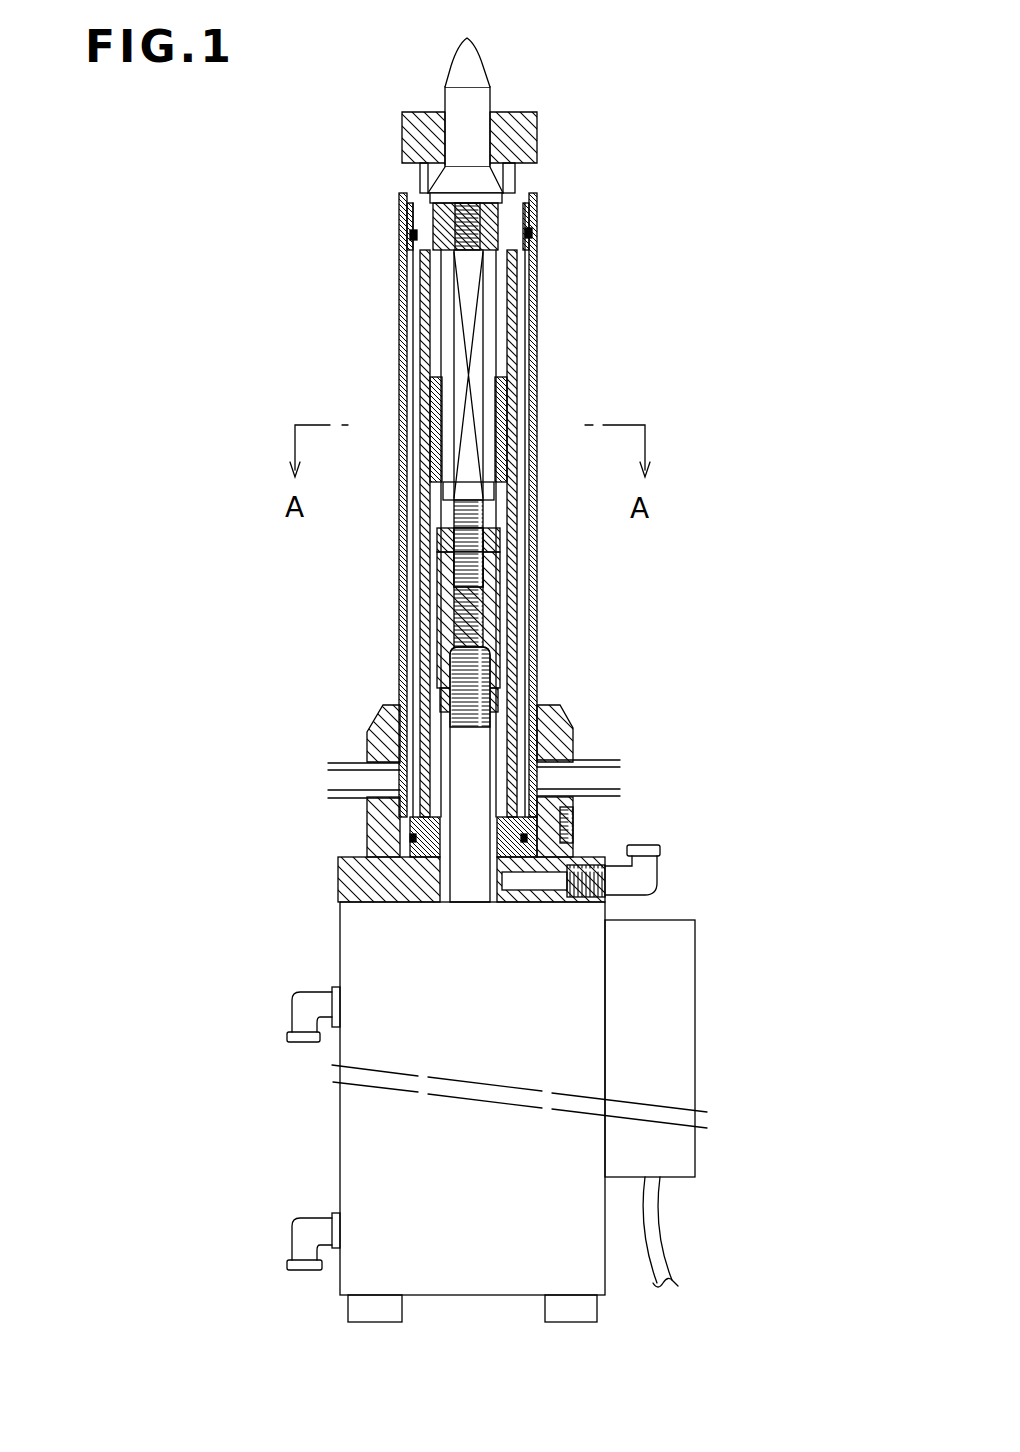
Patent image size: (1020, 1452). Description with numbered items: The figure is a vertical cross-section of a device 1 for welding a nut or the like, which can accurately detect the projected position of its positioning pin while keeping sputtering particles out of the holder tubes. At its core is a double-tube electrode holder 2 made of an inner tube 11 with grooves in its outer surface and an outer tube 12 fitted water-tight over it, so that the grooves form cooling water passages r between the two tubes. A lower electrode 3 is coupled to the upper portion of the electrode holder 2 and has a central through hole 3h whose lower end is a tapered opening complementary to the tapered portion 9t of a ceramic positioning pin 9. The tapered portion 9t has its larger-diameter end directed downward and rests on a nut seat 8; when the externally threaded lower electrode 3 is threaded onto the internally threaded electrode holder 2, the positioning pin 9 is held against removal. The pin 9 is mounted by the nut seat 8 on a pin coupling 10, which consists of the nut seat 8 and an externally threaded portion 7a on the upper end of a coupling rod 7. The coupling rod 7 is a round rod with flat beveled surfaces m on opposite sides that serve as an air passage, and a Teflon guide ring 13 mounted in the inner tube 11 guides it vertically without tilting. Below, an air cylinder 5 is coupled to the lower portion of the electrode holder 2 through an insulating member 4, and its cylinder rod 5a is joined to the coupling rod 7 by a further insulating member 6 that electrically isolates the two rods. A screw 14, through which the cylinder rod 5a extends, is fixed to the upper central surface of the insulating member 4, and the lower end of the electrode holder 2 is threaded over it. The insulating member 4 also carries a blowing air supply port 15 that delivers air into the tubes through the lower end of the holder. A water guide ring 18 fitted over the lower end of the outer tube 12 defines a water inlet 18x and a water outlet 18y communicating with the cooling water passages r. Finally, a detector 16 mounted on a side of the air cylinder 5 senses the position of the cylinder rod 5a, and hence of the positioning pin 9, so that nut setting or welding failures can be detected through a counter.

The device for welding a nut 1 is at (650, 180).
The double-tube electrode holder 2 is at (396, 261).
The lower electrode 3 is at (410, 138).
The through hole 3h is at (482, 130).
The insulating member 4 is at (353, 880).
The air cylinder 5 is at (357, 950).
The cylinder rod 5a is at (473, 752).
The insulating member 6 is at (505, 622).
The coupling rod 7 is at (492, 350).
The externally threaded portion 7a is at (520, 212).
The nut seat 8 is at (532, 229).
The positioning pin 9 is at (460, 100).
The tapered portion 9t is at (485, 188).
The pin coupling 10 is at (405, 218).
The inner tube 11 is at (426, 297).
The outer tube 12 is at (409, 340).
The guide ring 13 is at (501, 397).
The screw 14 is at (400, 840).
The blowing air supply port 15 is at (663, 868).
The detector 16 is at (668, 1008).
The water guide ring 18 is at (367, 730).
The water inlet 18x is at (337, 780).
The water outlet 18y is at (598, 778).
The flat beveled surfaces m is at (468, 310).
The cooling water passages r is at (410, 380).